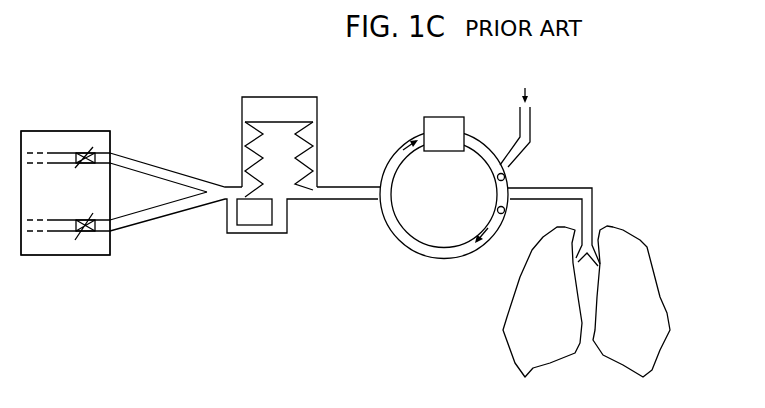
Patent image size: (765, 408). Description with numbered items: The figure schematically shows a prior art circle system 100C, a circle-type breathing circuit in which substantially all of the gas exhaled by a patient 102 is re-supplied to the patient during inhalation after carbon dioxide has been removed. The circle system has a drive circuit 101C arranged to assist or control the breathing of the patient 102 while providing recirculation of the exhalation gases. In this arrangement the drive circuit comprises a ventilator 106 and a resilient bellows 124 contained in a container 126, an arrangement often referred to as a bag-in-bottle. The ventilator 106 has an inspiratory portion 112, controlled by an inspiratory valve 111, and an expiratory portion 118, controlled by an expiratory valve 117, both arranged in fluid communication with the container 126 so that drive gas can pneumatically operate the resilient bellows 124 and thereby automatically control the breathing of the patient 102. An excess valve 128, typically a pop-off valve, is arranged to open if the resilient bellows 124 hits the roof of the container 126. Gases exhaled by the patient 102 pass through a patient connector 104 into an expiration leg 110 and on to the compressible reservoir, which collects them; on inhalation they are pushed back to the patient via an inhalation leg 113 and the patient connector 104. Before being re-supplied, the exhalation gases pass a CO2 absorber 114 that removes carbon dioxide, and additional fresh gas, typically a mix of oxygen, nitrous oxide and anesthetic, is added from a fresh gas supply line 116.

The circle system 100C is at (675, 117).
The drive circuit 101C is at (56, 92).
The patient 102 is at (652, 267).
The patient connector 104 is at (550, 187).
The ventilator 106 is at (50, 255).
The expiration leg 110 is at (420, 254).
The inspiratory valve 111 is at (85, 148).
The inspiratory portion 112 is at (136, 158).
The inhalation leg 113 is at (390, 157).
The CO2 absorber 114 is at (430, 117).
The fresh gas supply line 116 is at (533, 127).
The expiratory valve 117 is at (80, 243).
The expiratory portion 118 is at (143, 222).
The resilient bellows 124 is at (318, 142).
The container 126 is at (257, 97).
The excess valve 128 is at (270, 208).